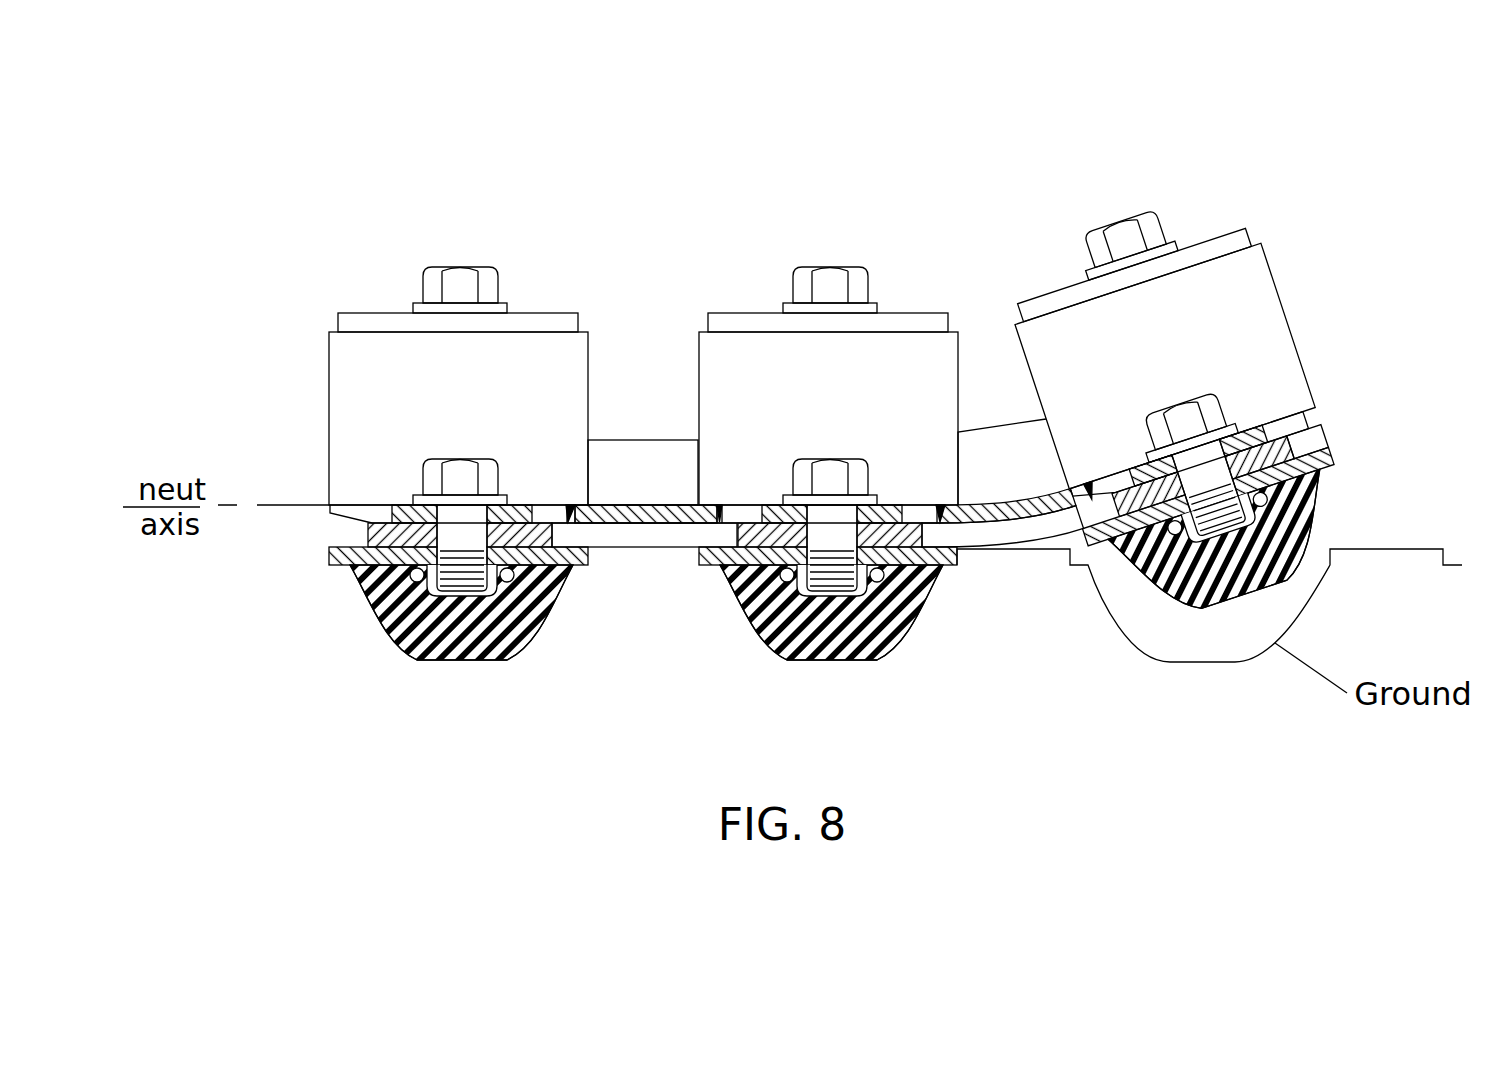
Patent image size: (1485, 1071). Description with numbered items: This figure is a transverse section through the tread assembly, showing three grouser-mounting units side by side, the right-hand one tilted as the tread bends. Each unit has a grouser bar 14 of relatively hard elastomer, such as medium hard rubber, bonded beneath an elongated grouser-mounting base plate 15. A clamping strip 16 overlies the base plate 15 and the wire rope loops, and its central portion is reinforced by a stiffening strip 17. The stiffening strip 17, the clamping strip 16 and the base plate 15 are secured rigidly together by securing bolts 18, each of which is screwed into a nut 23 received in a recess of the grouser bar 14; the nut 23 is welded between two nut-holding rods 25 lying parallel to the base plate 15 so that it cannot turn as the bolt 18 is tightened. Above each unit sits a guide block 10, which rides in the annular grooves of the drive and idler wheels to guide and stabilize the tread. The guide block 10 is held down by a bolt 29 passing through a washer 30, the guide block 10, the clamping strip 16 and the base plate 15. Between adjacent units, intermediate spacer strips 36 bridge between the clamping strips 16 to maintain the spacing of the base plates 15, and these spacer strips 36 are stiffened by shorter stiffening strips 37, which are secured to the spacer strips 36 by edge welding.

The guide block 10 is at (350, 373).
The washer 30 is at (397, 320).
The bolt 29 is at (448, 278).
The securing bolt 18 is at (470, 463).
The stiffening strip 17 is at (387, 510).
The clamping strip 16 is at (370, 535).
The grouser-mounting base plate 15 is at (570, 567).
The grouser bar 14 is at (525, 640).
The nut 23 is at (430, 582).
The nut-holding rod 25 is at (497, 653).
The intermediate spacer strip 36 is at (647, 457).
The stiffening strip 37 is at (632, 512).